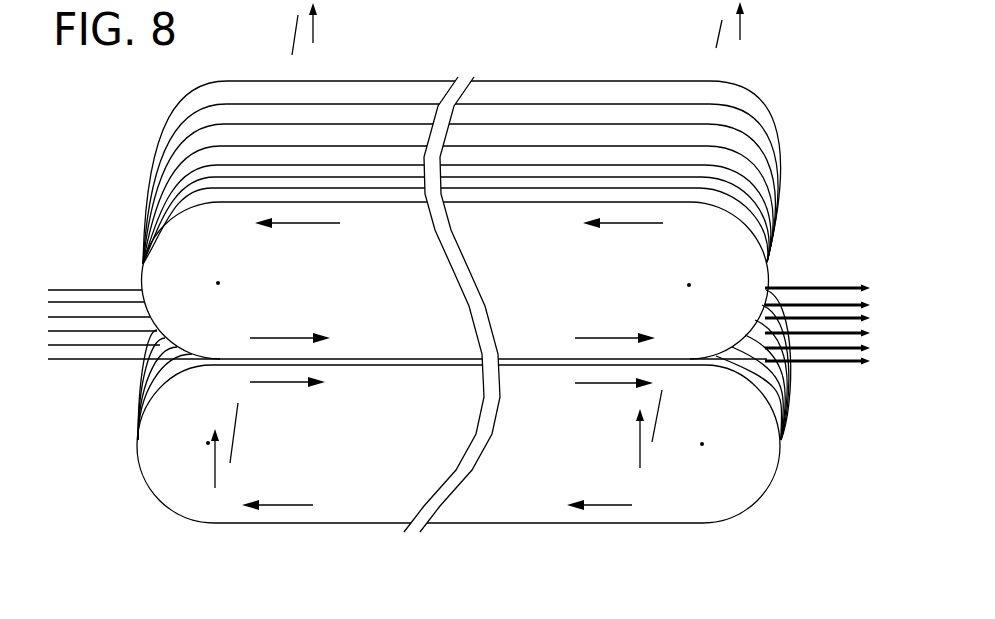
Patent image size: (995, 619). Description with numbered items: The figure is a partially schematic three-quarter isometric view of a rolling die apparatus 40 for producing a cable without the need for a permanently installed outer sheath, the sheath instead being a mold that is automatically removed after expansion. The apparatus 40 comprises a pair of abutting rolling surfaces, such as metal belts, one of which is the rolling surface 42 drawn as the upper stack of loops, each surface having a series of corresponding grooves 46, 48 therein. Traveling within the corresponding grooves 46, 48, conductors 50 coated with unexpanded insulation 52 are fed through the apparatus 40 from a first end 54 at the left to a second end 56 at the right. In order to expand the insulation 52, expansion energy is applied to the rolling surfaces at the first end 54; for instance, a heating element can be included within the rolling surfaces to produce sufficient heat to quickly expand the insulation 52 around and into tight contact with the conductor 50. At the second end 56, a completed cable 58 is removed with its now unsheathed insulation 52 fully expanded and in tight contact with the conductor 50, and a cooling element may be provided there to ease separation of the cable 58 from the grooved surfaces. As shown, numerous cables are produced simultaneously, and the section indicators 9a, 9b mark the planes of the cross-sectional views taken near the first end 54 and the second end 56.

The apparatus 40 is at (550, 58).
The rolling surface 42 is at (748, 152).
The grooves 46 is at (756, 229).
The grooves 48 is at (776, 409).
The conductors 50 is at (84, 360).
The insulation 52 is at (50, 366).
The first end 54 is at (145, 380).
The second end 56 is at (707, 366).
The completed cable 58 is at (858, 366).
The section line 9a is at (269, 245).
The section line 9b is at (693, 243).